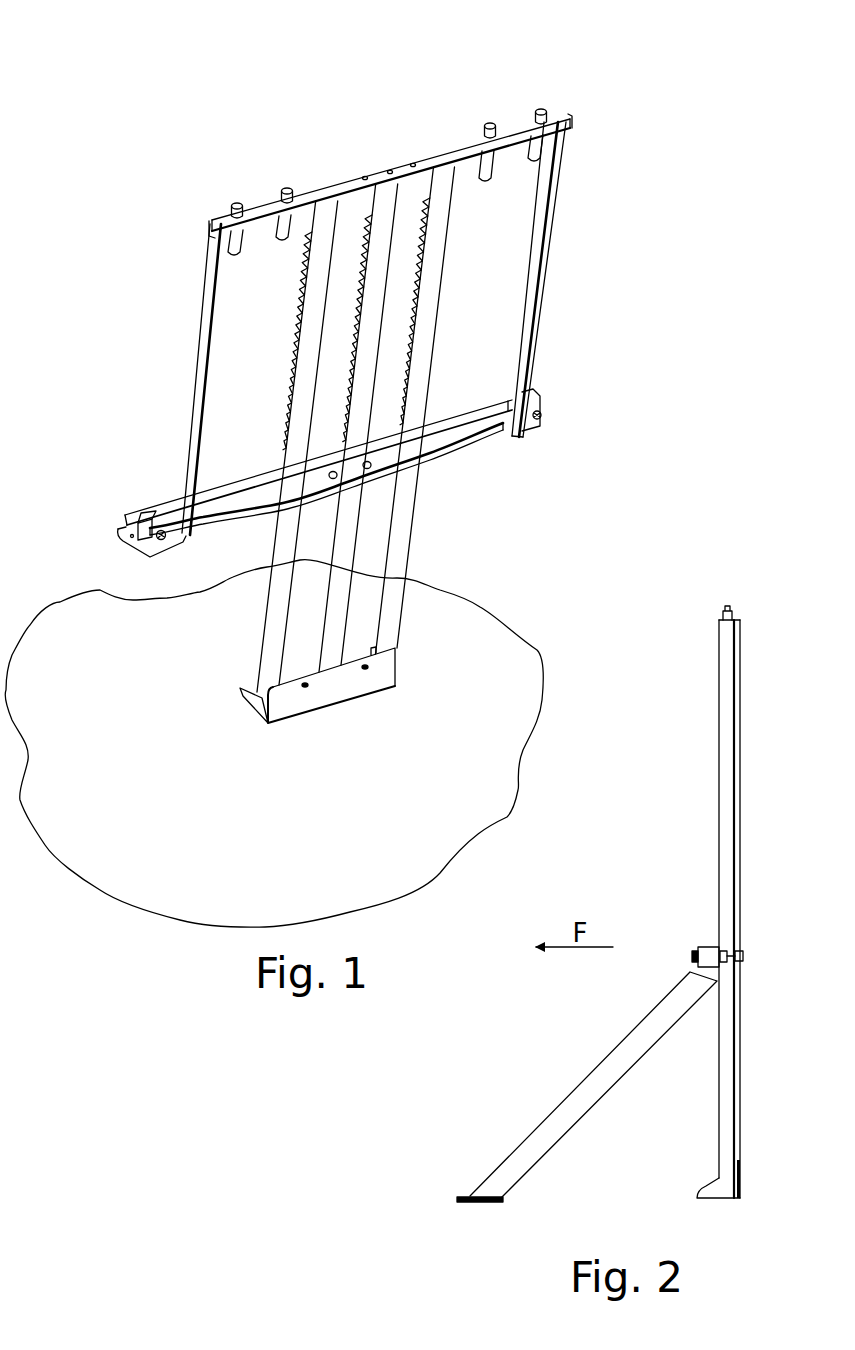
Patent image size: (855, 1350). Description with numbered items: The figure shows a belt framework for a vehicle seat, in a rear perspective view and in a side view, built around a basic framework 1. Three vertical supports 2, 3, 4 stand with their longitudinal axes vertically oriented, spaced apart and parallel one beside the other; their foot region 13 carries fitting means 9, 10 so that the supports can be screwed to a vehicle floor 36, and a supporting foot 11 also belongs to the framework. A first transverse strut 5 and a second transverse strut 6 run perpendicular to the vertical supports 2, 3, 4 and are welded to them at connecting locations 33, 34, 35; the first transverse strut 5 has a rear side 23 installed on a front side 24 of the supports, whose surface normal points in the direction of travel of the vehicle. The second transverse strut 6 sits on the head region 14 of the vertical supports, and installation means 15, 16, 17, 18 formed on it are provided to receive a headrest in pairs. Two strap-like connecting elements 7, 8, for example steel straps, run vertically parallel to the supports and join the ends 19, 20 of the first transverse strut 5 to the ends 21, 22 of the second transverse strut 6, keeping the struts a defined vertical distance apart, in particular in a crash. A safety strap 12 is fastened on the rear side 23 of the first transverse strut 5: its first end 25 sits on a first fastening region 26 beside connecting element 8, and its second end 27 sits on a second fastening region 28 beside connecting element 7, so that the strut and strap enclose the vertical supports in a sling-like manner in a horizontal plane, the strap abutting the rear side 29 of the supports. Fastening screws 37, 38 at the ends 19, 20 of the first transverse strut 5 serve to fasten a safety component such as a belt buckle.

In FIG. 1, the basic framework 1 is at (165, 777).
In FIG. 1, the vertical support 2 is at (263, 446).
In FIG. 2, the vertical support 2 is at (775, 909).
In FIG. 1, the vertical support 3 is at (293, 428).
In FIG. 1, the vertical support 4 is at (427, 410).
In FIG. 1, the first transverse strut 5 is at (537, 394).
In FIG. 2, the first transverse strut 5 is at (709, 950).
In FIG. 1, the second transverse strut 6 is at (562, 113).
In FIG. 2, the second transverse strut 6 is at (735, 607).
In FIG. 1, the connecting element 7 is at (566, 312).
In FIG. 1, the connecting element 8 is at (204, 360).
In FIG. 2, the connecting element 8 is at (686, 899).
In FIG. 1, the fitting means 9 is at (250, 703).
In FIG. 2, the fitting means 9 is at (720, 1200).
In FIG. 1, the fitting means 10 is at (125, 545).
In FIG. 2, the fitting means 10 is at (482, 1202).
In FIG. 1, the supporting foot 11 is at (341, 523).
In FIG. 2, the supporting foot 11 is at (545, 1140).
In FIG. 1, the safety strap 12 is at (318, 426).
In FIG. 2, the safety strap 12 is at (745, 957).
In FIG. 1, the foot region 13 is at (313, 724).
In FIG. 1, the head region 14 is at (415, 88).
In FIG. 1, the installation means 15 is at (540, 111).
In FIG. 1, the installation means 16 is at (490, 125).
In FIG. 1, the installation means 17 is at (286, 190).
In FIG. 1, the installation means 18 is at (237, 204).
In FIG. 1, the end of first transverse strut 19 is at (92, 549).
In FIG. 1, the end of first transverse strut 20 is at (556, 420).
In FIG. 1, the end of second transverse strut 21 is at (193, 230).
In FIG. 1, the end of second transverse strut 22 is at (590, 112).
In FIG. 1, the rear side 23 is at (527, 435).
In FIG. 2, the front side 24 is at (716, 1070).
In FIG. 1, the first end 25 is at (198, 522).
In FIG. 1, the first fastening region 26 is at (213, 500).
In FIG. 1, the second end 27 is at (497, 432).
In FIG. 1, the second fastening region 28 is at (501, 400).
In FIG. 2, the rear side 29 is at (745, 1085).
In FIG. 1, the connecting location 33 is at (283, 455).
In FIG. 1, the connecting location 34 is at (343, 443).
In FIG. 1, the connecting location 35 is at (405, 428).
In FIG. 1, the vehicle floor 36 is at (192, 888).
In FIG. 1, the fastening screw 37 is at (161, 540).
In FIG. 1, the fastening screw 38 is at (544, 413).